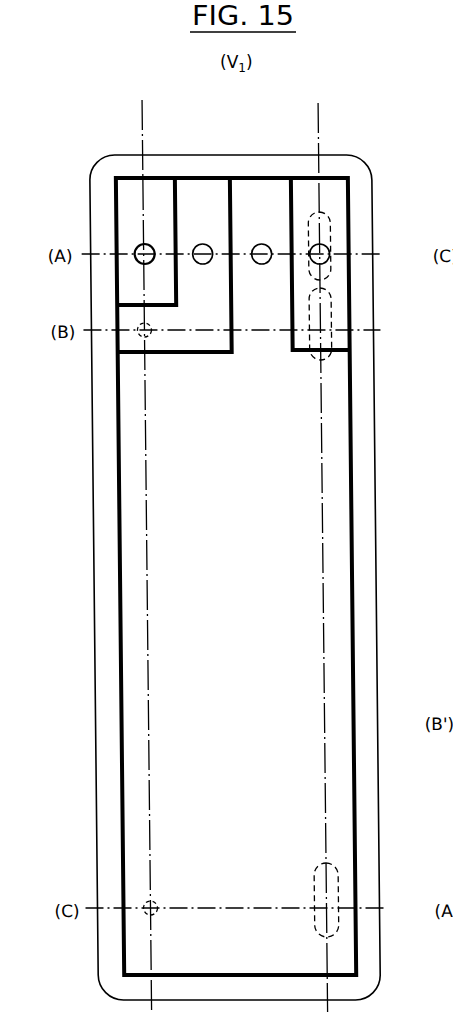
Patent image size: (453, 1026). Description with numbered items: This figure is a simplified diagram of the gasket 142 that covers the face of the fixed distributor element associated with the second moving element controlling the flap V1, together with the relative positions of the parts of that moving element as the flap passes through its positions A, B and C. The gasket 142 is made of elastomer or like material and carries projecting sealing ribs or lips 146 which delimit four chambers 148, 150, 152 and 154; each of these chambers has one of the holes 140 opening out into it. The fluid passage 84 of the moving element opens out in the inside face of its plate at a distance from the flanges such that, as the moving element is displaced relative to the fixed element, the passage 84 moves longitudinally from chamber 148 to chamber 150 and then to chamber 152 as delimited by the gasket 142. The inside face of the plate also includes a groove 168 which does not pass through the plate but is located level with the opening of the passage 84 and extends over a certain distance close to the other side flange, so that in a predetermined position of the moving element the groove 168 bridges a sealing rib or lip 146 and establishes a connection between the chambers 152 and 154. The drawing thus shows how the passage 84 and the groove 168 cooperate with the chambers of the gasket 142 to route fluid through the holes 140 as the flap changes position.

The gasket 142 is at (247, 151).
The sealing ribs or lips 146 is at (112, 545).
The chamber 148 is at (126, 191).
The chamber 150 is at (191, 339).
The chamber 154 is at (338, 287).
The holes 140 is at (150, 244).
The groove 168 is at (308, 356).
The fluid passage 84 is at (134, 334).
The chamber 152 is at (265, 565).